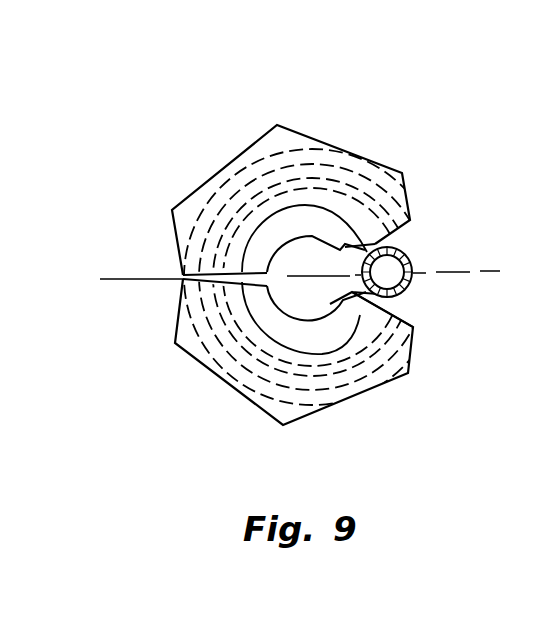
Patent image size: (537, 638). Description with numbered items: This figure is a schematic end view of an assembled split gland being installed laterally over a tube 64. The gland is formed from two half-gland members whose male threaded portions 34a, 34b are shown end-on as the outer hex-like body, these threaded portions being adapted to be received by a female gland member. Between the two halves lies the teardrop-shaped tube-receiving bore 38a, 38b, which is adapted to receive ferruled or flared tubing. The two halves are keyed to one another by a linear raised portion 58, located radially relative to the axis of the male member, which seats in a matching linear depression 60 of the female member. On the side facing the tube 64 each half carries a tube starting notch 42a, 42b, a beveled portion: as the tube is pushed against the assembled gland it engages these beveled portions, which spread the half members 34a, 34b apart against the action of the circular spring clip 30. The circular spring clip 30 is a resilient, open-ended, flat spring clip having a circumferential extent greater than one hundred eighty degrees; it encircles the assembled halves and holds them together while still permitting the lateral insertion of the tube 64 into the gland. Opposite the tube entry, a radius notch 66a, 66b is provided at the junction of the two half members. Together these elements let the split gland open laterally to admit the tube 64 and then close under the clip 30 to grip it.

The circular spring clip 30 is at (214, 203).
The male threaded portion of half member 34a is at (270, 187).
The male threaded portion of half member 34b is at (300, 377).
The tube-receiving bore 38a is at (293, 236).
The tube-receiving bore 38b is at (290, 327).
The tube starting notch 42a is at (378, 241).
The tube starting notch 42b is at (395, 312).
The linear raised portion 58 is at (356, 312).
The linear depression 60 is at (343, 217).
The tube 64 is at (378, 297).
The radius notch 66a is at (178, 274).
The radius notch 66b is at (178, 280).